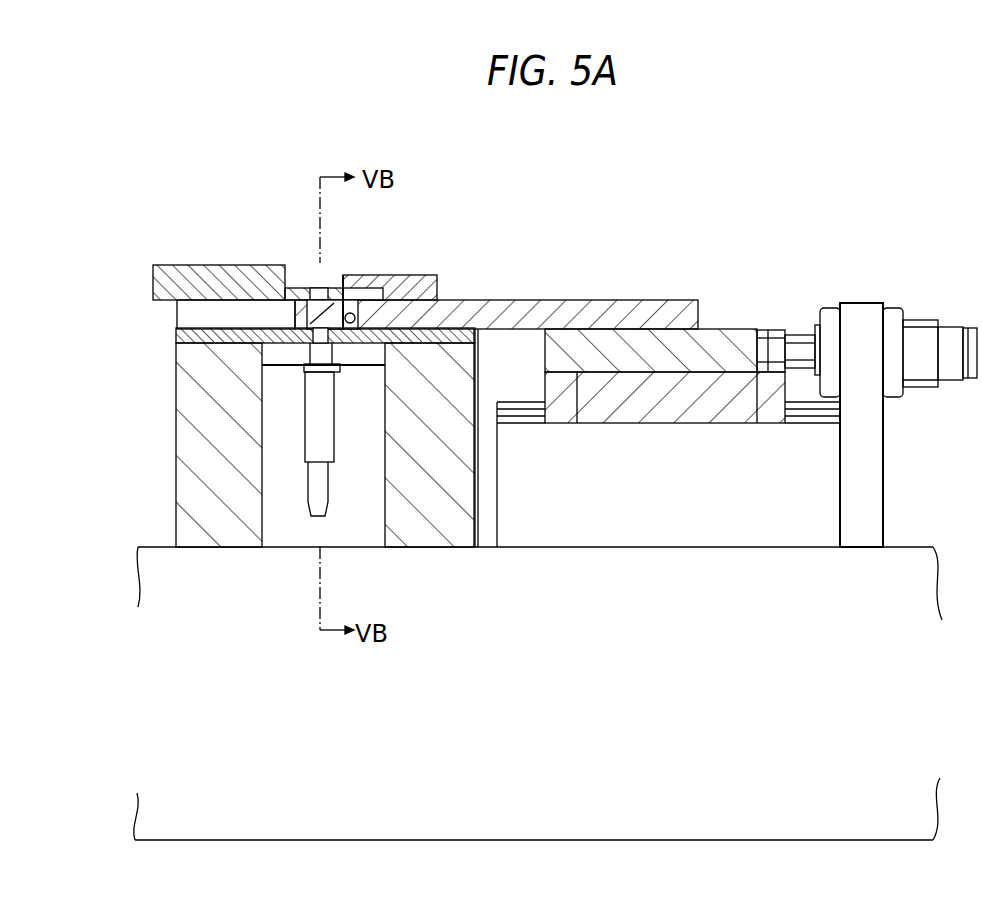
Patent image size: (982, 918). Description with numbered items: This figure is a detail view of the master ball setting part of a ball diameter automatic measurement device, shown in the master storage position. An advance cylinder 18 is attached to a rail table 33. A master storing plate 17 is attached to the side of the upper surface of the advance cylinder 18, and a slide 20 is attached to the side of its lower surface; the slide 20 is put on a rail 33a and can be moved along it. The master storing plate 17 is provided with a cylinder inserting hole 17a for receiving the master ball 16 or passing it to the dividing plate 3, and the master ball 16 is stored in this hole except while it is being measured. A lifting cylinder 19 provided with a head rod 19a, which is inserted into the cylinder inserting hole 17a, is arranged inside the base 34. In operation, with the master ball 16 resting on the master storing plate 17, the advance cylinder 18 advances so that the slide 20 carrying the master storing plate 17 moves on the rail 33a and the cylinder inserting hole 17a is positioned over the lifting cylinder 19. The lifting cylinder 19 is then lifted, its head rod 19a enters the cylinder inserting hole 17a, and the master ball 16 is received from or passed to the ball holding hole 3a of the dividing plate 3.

The dividing plate 3 is at (202, 265).
The ball holding hole 3a is at (320, 287).
The master ball 16 is at (388, 283).
The master storing plate 17 is at (574, 312).
The cylinder inserting hole 17a is at (344, 276).
The advance cylinder 18 is at (920, 333).
The lifting cylinder 19 is at (330, 460).
The head rod 19a is at (307, 338).
The slide 20 is at (665, 405).
The rail table 33 is at (518, 457).
The rail 33a is at (490, 402).
The base 34 is at (218, 547).